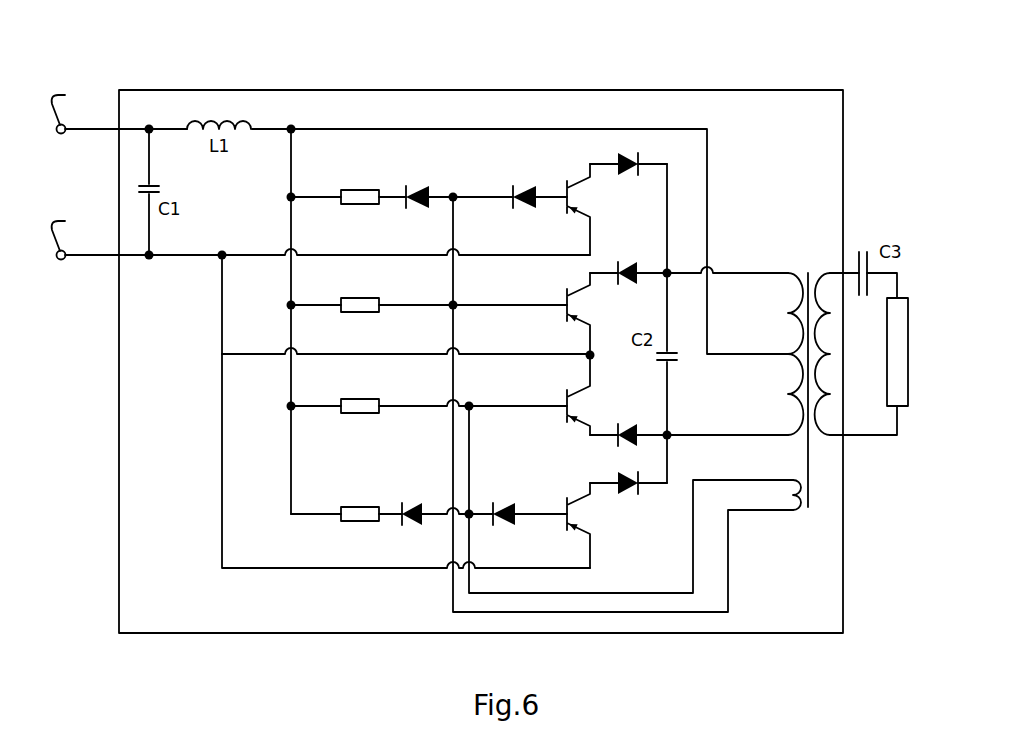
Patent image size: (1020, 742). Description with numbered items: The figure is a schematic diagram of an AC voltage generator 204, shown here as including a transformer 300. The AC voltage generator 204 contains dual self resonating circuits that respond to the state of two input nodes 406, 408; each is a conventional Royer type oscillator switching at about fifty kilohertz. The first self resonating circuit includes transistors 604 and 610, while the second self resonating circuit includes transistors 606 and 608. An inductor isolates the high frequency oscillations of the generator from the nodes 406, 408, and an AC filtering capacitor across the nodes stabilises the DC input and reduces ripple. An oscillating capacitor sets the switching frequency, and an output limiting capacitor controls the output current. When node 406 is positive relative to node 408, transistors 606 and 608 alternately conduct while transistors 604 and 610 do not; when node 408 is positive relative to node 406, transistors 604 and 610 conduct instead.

The AC voltage generator 204 is at (484, 70).
The transformer 300 is at (810, 235).
The node 406 is at (82, 111).
The node 408 is at (82, 237).
The transistor 604 is at (574, 183).
The transistor 606 is at (574, 292).
The transistor 608 is at (574, 393).
The transistor 610 is at (574, 503).